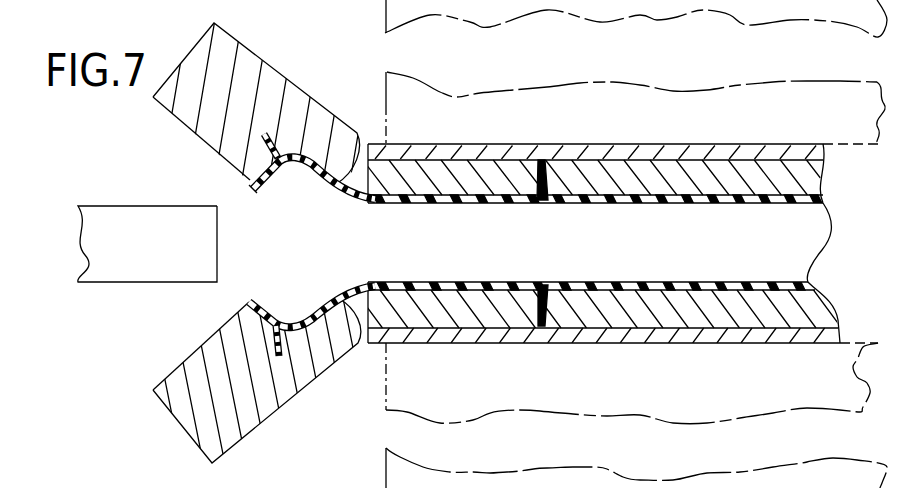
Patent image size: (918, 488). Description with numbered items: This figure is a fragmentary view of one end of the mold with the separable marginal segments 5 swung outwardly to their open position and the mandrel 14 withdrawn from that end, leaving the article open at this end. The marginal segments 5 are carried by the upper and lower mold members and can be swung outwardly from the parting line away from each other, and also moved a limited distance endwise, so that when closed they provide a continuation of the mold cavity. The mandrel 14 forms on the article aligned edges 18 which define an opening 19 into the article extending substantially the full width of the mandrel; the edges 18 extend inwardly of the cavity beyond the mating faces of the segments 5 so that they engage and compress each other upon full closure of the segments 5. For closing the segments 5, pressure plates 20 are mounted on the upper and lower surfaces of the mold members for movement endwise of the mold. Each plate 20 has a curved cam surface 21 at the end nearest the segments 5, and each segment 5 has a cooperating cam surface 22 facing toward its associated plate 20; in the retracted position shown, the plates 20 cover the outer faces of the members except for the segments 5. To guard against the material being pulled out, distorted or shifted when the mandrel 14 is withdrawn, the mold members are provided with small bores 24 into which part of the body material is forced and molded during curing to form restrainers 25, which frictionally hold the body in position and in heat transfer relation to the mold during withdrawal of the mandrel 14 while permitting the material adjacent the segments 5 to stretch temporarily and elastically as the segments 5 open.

The marginal segment 5 is at (232, 37).
The mandrel 14 is at (147, 281).
The aligned edges 18 is at (251, 192).
The opening 19 is at (252, 295).
The pressure plate 20 is at (470, 145).
The curved cam surface 21 is at (433, 331).
The cam surface 22 is at (337, 390).
The small bore 24 is at (273, 157).
The restrainer 25 is at (263, 138).